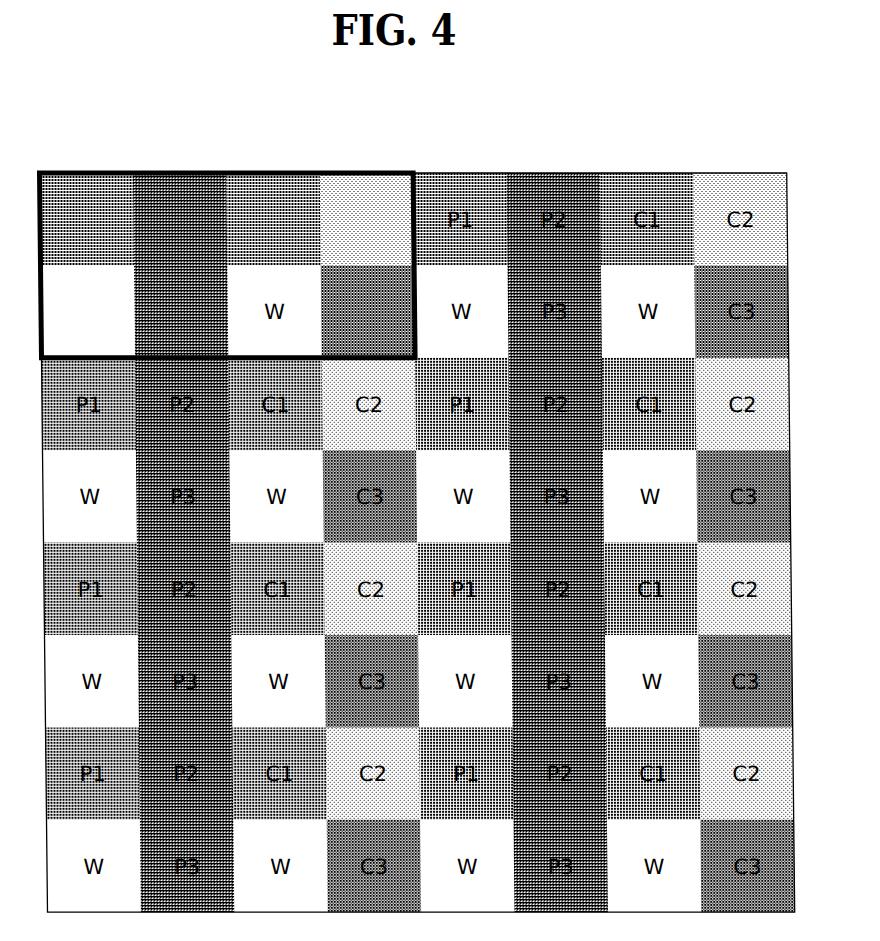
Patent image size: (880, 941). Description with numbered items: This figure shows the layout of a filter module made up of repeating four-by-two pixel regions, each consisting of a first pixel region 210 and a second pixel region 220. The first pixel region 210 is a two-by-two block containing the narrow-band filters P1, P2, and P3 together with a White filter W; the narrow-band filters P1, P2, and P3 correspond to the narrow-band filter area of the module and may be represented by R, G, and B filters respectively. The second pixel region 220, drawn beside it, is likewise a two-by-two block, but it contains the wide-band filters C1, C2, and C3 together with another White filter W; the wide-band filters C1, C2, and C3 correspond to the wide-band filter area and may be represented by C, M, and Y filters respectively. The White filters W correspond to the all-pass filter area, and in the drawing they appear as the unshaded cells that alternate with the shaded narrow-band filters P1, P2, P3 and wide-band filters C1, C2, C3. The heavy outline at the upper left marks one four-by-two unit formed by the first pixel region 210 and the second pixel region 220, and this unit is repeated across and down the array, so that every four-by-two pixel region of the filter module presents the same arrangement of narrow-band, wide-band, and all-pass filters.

The first pixel region 210 is at (118, 172).
The second pixel region 220 is at (323, 498).
The narrow-band filter P1 is at (87, 219).
The narrow-band filter P2 is at (180, 219).
The narrow-band filter P3 is at (181, 311).
The wide-band filter C1 is at (273, 219).
The wide-band filter C2 is at (367, 219).
The wide-band filter C3 is at (368, 311).
The White filter W is at (87, 311).